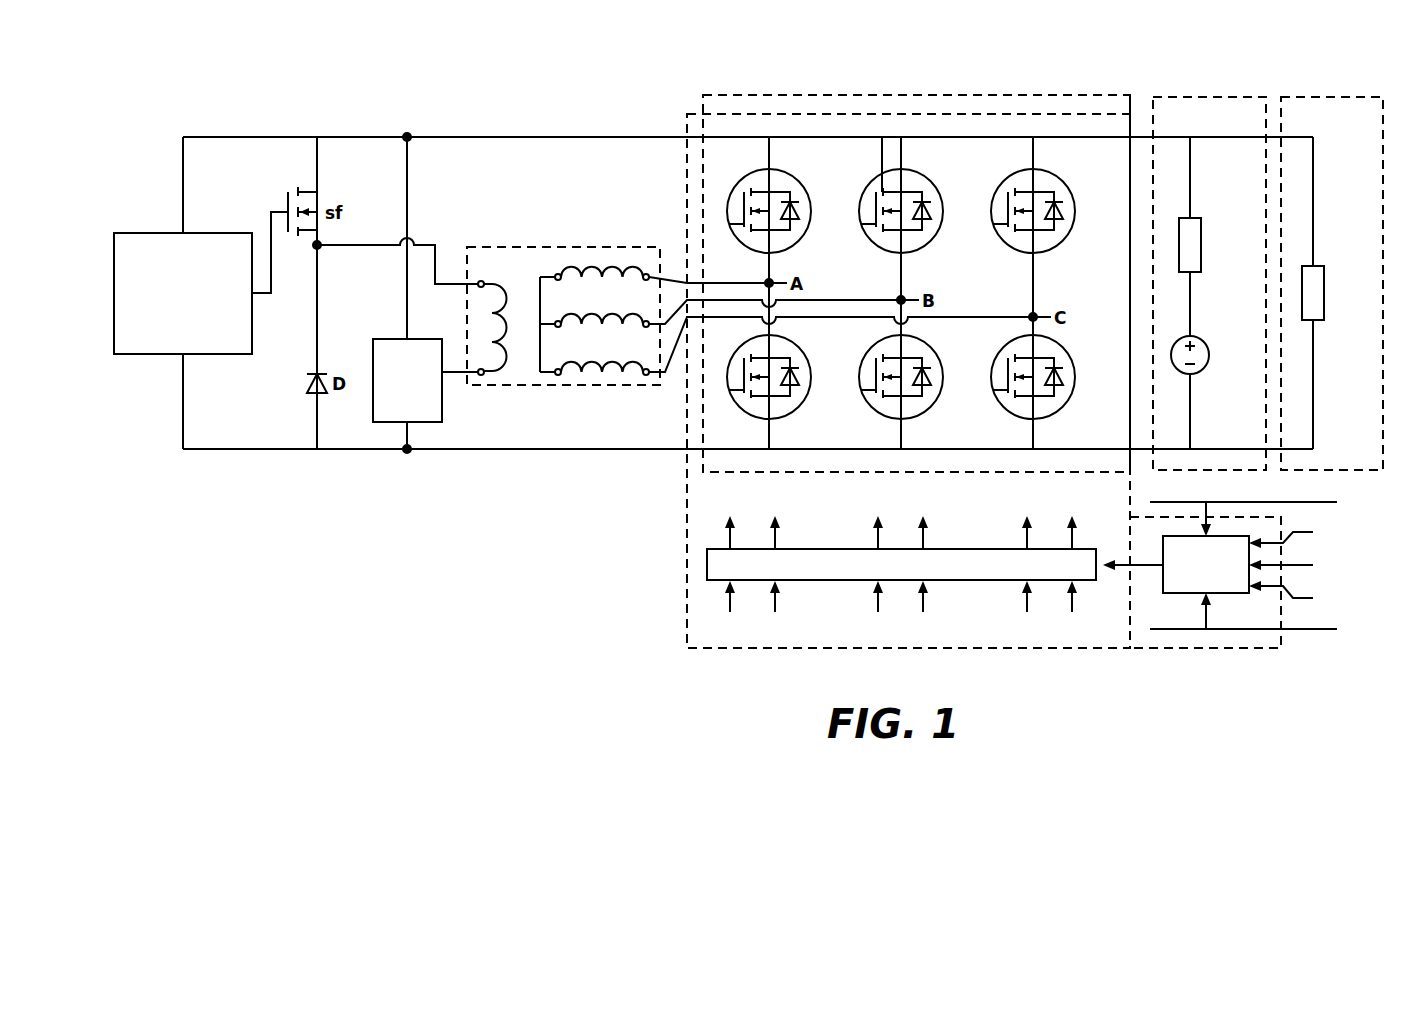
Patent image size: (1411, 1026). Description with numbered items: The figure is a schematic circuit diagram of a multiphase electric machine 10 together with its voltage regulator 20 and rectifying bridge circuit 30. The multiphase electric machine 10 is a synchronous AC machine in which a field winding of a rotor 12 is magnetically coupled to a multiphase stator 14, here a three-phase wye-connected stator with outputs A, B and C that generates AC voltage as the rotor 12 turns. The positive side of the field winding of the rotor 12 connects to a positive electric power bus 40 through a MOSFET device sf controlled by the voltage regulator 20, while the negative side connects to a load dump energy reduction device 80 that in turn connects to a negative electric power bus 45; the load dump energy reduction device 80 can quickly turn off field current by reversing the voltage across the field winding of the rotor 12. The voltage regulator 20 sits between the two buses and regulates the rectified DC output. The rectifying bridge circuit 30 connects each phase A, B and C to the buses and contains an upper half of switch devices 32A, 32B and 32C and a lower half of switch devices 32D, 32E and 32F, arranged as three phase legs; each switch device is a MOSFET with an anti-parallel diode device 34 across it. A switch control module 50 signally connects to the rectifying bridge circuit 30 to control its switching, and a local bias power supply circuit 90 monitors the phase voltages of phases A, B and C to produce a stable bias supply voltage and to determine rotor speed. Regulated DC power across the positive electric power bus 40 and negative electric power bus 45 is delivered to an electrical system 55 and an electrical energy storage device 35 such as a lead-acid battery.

The multiphase electric machine 10 is at (563, 303).
The field winding of a rotor 12 is at (481, 281).
The multiphase stator 14 is at (592, 252).
The voltage regulator 20 is at (183, 293).
The rectifying bridge circuit 30 is at (909, 95).
The switch device 32A is at (799, 238).
The switch device 32B is at (931, 238).
The switch device 32C is at (1063, 238).
The switch device 32D is at (799, 405).
The switch device 32E is at (931, 405).
The switch device 32F is at (1063, 405).
The diode device 34 is at (806, 196).
The electrical energy storage device 35 is at (1200, 97).
The positive electric power bus 40 is at (535, 137).
The negative electric power bus 45 is at (543, 449).
The switch control module 50 is at (898, 566).
The electrical system 55 is at (1333, 97).
The load dump energy reduction device 80 is at (374, 421).
The local bias power supply circuit 90 is at (1235, 593).